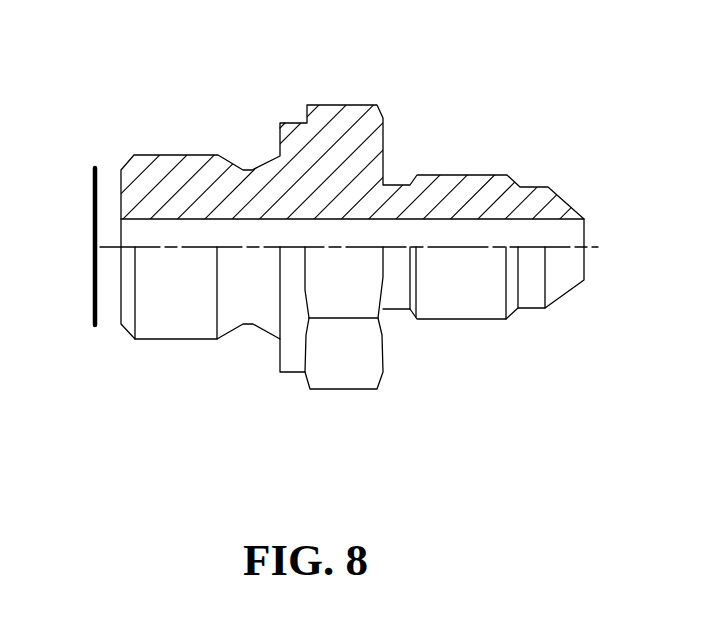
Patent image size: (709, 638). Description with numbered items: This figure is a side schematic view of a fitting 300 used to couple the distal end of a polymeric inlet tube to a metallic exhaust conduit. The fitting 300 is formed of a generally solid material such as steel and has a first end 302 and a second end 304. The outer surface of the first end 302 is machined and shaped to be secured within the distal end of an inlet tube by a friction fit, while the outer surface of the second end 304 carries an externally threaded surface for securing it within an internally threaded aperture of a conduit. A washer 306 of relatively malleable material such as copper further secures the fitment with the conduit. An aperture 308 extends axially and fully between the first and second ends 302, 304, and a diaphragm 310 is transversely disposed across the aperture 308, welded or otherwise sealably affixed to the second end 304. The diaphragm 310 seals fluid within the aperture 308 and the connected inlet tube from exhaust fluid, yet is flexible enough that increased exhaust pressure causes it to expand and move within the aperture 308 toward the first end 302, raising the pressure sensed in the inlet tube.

The fitting 300 is at (403, 77).
The first end 302 is at (462, 175).
The second end 304 is at (148, 155).
The washer 306 is at (292, 338).
The aperture 308 is at (547, 235).
The diaphragm 310 is at (93, 217).